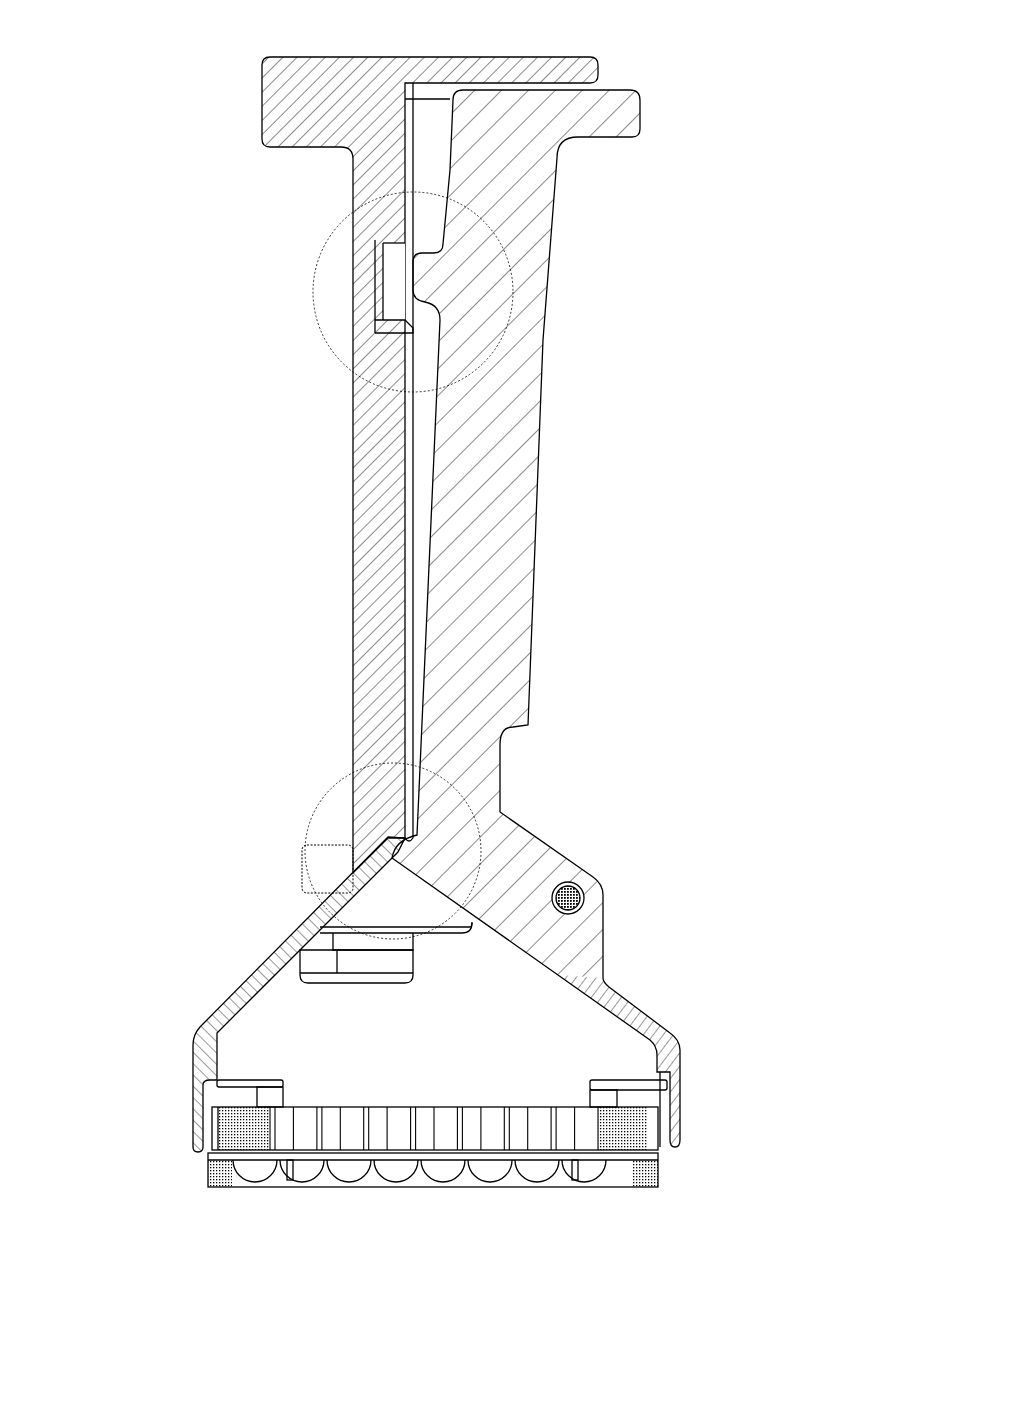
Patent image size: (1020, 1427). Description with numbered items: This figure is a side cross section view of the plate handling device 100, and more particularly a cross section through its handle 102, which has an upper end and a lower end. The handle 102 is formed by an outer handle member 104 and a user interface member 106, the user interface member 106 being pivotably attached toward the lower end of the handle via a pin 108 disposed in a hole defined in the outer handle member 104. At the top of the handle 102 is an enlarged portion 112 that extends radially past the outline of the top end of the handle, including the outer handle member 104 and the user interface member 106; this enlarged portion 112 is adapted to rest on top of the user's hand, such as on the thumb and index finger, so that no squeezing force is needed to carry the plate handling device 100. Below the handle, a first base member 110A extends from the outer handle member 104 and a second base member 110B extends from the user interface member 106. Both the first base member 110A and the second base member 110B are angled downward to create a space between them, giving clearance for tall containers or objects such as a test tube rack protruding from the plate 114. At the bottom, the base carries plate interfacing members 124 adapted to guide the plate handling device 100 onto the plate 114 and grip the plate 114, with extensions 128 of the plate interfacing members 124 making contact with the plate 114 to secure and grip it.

The plate handling device 100 is at (752, 54).
The handle 102 is at (228, 432).
The outer handle member 104 is at (370, 582).
The user interface member 106 is at (526, 404).
The pin 108 is at (577, 887).
The first base member 110A is at (256, 961).
The second base member 110B is at (626, 989).
The enlarged portion 112 is at (213, 68).
The plate 114 is at (579, 1190).
The plate interfacing members 124 is at (150, 1134).
The extensions 128 is at (590, 1066).